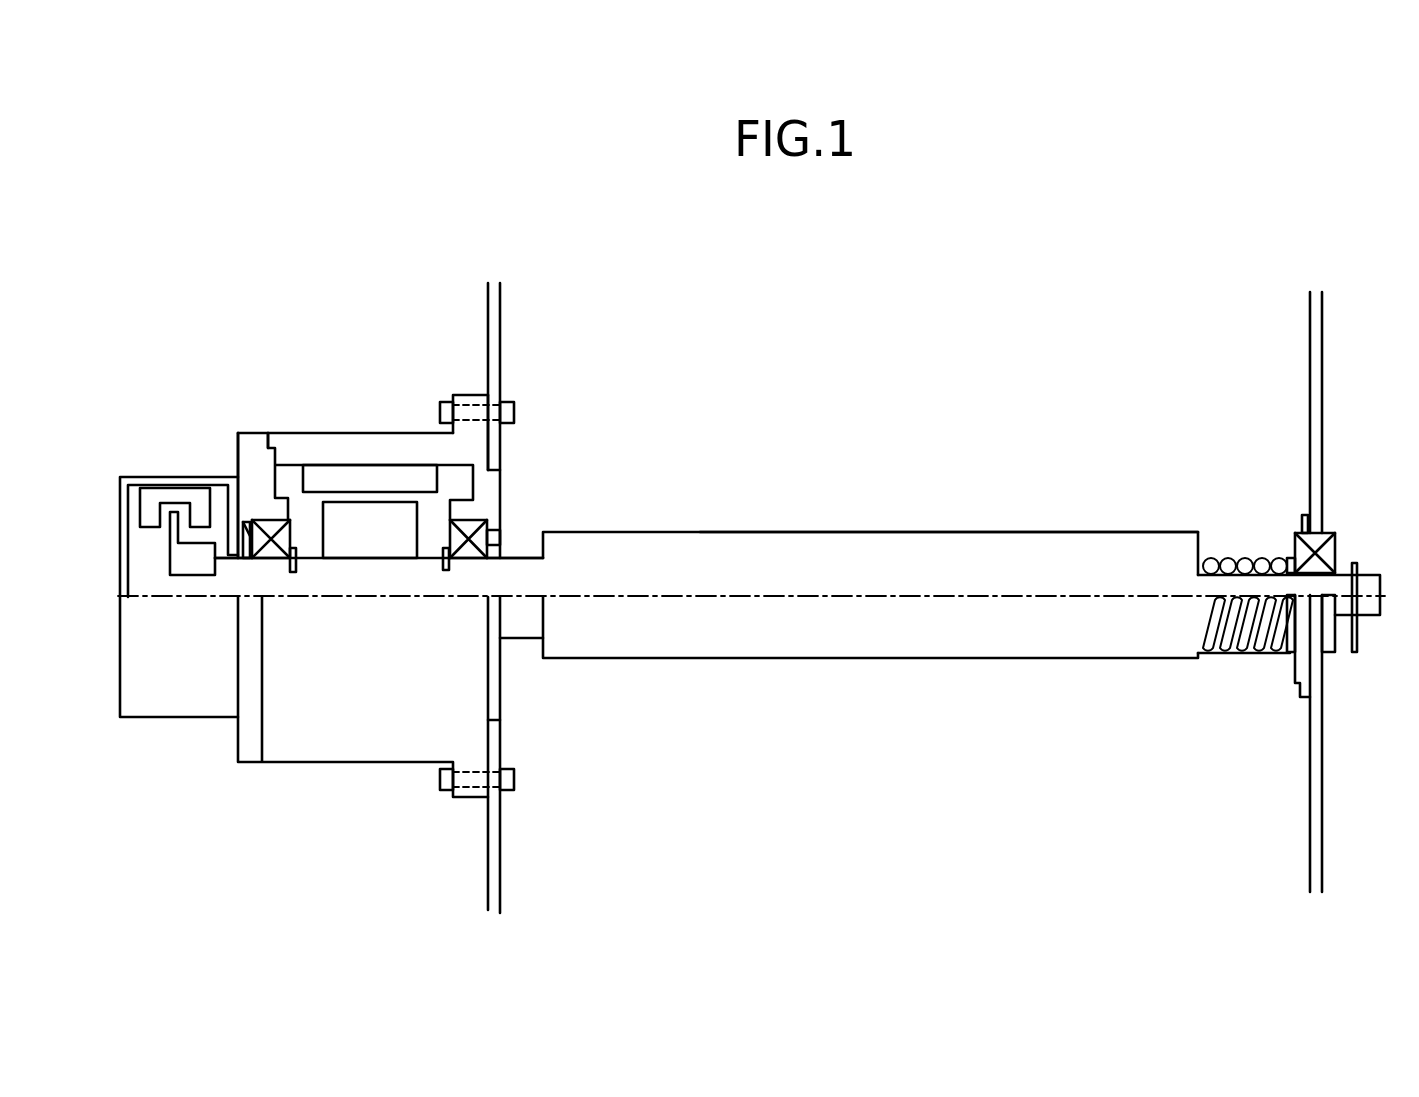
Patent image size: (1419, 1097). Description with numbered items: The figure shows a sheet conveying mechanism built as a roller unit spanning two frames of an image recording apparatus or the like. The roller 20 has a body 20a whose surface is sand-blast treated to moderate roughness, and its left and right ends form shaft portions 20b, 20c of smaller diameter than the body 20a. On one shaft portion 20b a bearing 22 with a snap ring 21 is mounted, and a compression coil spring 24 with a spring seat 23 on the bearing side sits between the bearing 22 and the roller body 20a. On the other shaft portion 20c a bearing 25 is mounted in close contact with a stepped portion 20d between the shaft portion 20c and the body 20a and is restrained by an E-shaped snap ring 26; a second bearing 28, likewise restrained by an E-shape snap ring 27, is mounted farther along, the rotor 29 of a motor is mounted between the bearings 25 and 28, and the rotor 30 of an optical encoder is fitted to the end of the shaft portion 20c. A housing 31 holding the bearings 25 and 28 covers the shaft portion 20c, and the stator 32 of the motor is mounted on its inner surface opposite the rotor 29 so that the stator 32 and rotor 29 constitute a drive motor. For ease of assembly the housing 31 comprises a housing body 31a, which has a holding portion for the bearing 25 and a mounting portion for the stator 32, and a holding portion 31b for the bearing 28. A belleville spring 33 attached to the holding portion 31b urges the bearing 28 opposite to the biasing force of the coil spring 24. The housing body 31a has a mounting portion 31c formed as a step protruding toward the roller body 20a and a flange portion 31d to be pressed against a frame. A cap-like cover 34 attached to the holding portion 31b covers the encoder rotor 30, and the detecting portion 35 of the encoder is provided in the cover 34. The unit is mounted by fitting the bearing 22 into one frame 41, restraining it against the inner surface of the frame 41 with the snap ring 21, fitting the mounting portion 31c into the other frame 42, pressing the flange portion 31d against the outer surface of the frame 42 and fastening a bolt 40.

The roller 20 is at (837, 520).
The body 20a is at (955, 557).
The shaft portion 20b is at (1212, 592).
The shaft portion 20c is at (388, 580).
The stepped portion 20d is at (510, 573).
The snap ring 21 is at (1304, 515).
The bearing 22 is at (1328, 555).
The spring seat 23 is at (1290, 555).
The compression coil spring 24 is at (1222, 558).
The bearing 25 is at (505, 523).
The E-shaped snap ring 26 is at (443, 568).
The E-shape snap ring 27 is at (295, 572).
The bearing 28 is at (258, 455).
The rotor 29 is at (362, 520).
The rotor 30 is at (188, 563).
The housing 31 is at (298, 423).
The housing body 31a is at (292, 455).
The holding portion 31b is at (247, 500).
The mounting portion 31c is at (487, 483).
The flange portion 31d is at (468, 403).
The stator 32 is at (315, 478).
The belleville spring 33 is at (245, 520).
The cover 34 is at (118, 543).
The detecting portion 35 is at (155, 507).
The bolt 40 is at (438, 400).
The frame 41 is at (1315, 357).
The frame 42 is at (500, 320).